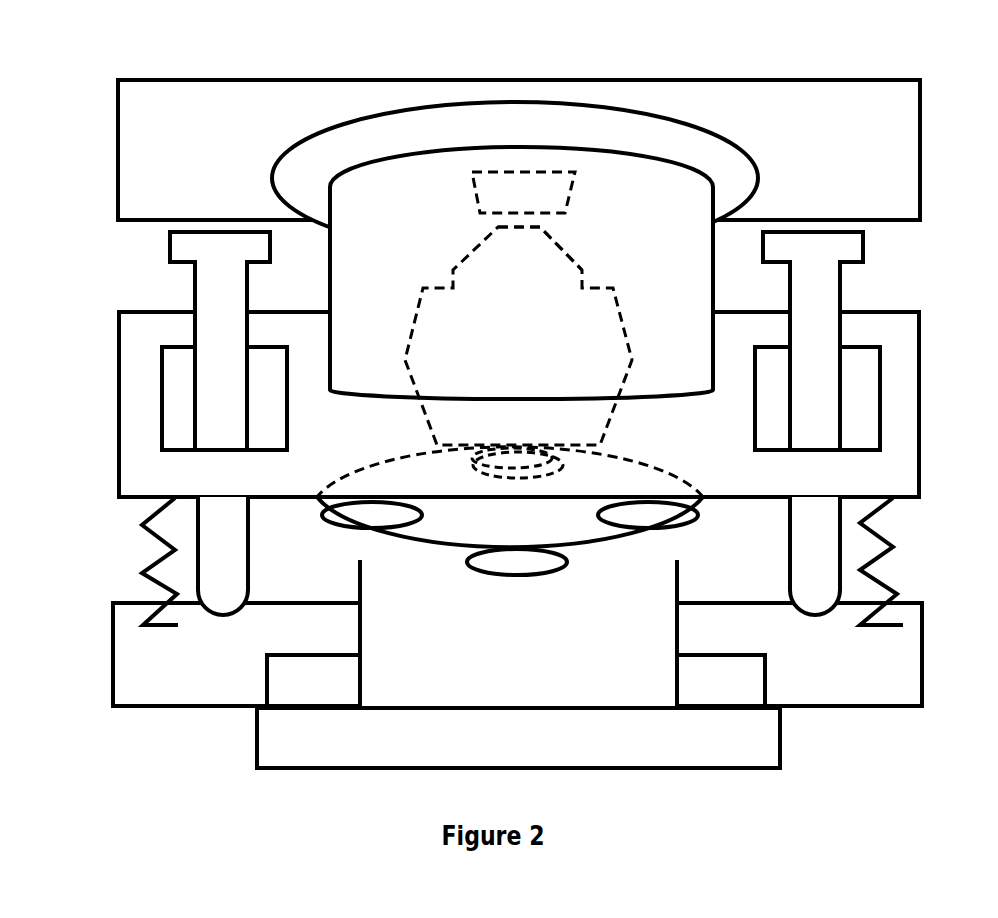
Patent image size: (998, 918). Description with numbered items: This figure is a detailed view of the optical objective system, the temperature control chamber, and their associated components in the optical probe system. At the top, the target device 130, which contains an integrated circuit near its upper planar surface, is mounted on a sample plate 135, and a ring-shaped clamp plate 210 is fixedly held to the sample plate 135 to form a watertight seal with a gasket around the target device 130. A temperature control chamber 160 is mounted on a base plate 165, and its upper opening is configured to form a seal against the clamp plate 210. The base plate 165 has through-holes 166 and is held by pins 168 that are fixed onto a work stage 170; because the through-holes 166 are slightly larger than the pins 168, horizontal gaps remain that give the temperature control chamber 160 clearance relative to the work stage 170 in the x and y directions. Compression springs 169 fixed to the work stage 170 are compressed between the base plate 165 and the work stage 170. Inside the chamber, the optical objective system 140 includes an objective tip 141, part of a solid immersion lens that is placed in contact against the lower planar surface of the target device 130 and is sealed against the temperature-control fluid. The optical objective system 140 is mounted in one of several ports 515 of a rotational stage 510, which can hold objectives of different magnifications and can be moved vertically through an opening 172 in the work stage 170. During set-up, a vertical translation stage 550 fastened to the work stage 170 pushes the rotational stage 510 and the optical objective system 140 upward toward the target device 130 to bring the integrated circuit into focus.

The sample plate 135 is at (905, 112).
The clamp plate 210 is at (577, 119).
The temperature control chamber 160 is at (634, 183).
The target device 130 is at (490, 196).
The objective tip 141 is at (533, 251).
The optical objective system 140 is at (537, 338).
The base plate 165 is at (900, 330).
The through-holes 166 is at (180, 388).
The rotational stage 510 is at (633, 484).
The ports 515 is at (468, 473).
The pins 168 is at (233, 567).
The compression springs 169 is at (155, 561).
The work stage 170 is at (900, 643).
The opening 172 is at (735, 693).
The vertical translation stage 550 is at (533, 756).